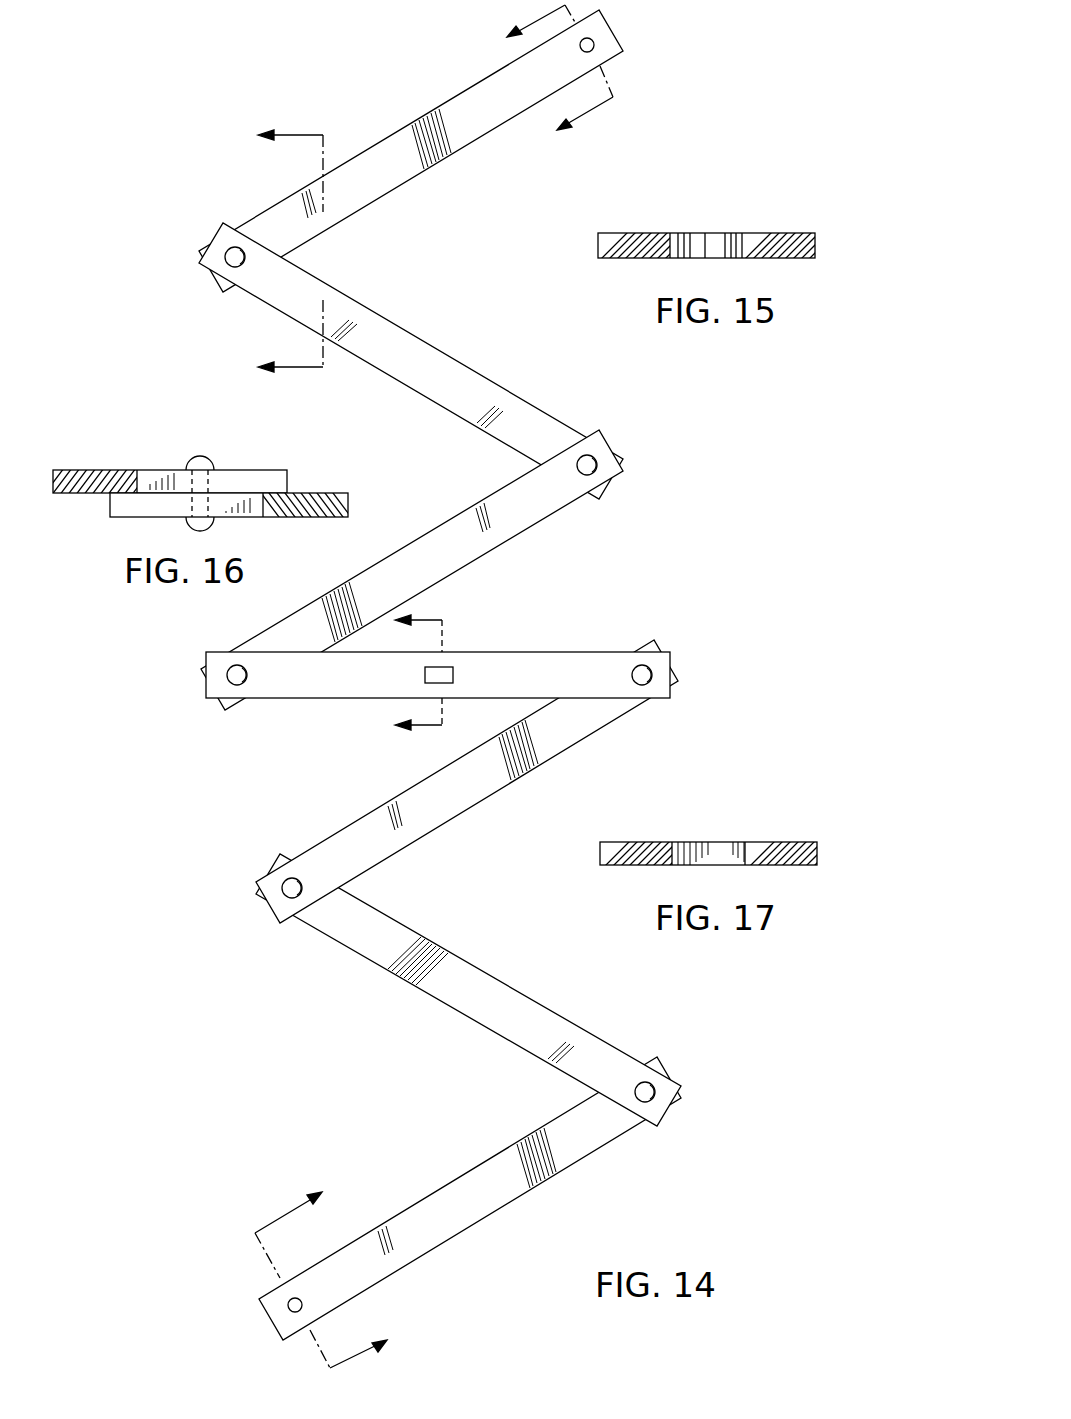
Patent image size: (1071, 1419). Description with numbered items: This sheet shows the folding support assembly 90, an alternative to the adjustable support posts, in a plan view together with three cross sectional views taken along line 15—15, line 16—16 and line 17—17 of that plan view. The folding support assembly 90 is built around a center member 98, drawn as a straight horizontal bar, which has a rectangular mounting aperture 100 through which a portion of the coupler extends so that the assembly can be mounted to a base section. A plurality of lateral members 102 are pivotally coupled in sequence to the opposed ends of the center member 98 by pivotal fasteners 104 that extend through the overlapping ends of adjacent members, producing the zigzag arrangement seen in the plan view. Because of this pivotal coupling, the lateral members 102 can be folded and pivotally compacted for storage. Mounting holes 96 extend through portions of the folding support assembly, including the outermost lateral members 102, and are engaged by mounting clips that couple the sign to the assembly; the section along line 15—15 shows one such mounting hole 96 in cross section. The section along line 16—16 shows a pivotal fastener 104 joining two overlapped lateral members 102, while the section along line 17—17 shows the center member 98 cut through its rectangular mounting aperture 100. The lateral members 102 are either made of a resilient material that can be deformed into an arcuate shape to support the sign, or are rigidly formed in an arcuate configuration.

In FIG. 14, the folding support assembly 90 is at (517, 675).
In FIG. 15, the mounting holes 96 is at (712, 240).
In FIG. 14, the center member 98 is at (438, 672).
In FIG. 14, the rectangular mounting aperture 100 is at (445, 668).
In FIG. 17, the rectangular mounting aperture 100 is at (712, 850).
In FIG. 14, the lateral members 102 is at (485, 107).
In FIG. 16, the pivotal fasteners 104 is at (200, 462).
In FIG. 14, the section line 15— 15 is at (434, 686).
In FIG. 14, the section line 16— 16 is at (271, 252).
In FIG. 14, the section line 17— 17 is at (439, 673).